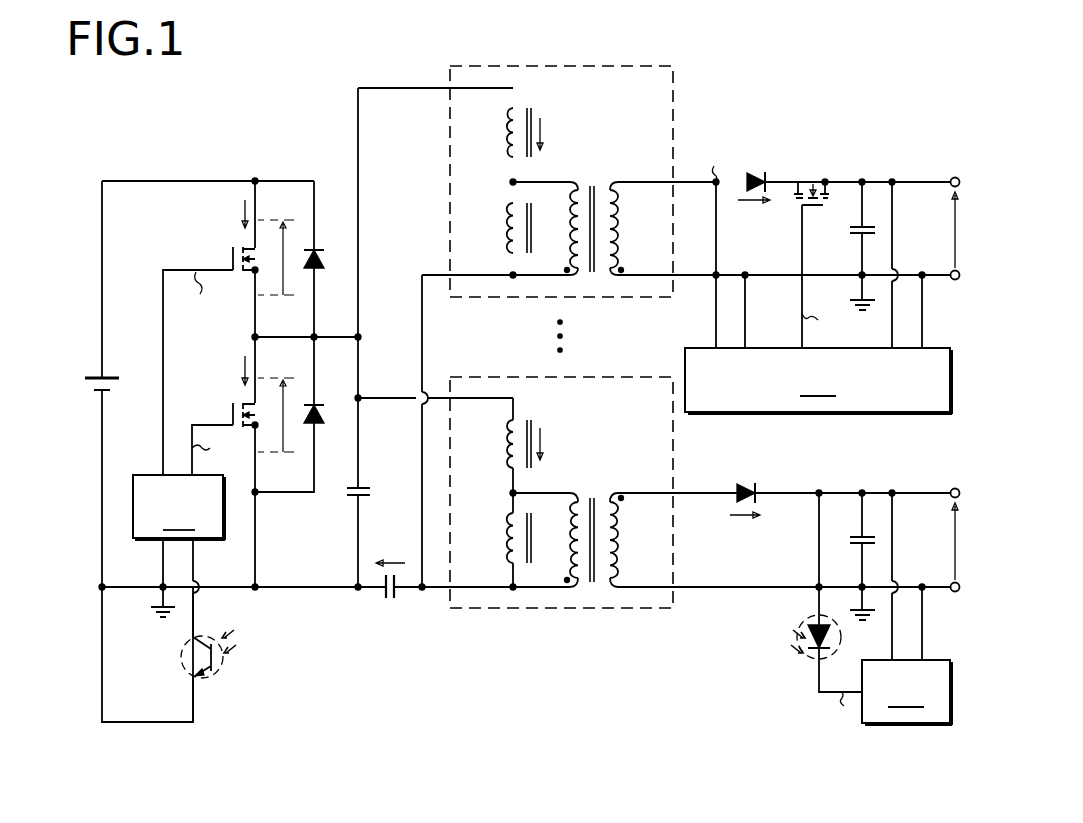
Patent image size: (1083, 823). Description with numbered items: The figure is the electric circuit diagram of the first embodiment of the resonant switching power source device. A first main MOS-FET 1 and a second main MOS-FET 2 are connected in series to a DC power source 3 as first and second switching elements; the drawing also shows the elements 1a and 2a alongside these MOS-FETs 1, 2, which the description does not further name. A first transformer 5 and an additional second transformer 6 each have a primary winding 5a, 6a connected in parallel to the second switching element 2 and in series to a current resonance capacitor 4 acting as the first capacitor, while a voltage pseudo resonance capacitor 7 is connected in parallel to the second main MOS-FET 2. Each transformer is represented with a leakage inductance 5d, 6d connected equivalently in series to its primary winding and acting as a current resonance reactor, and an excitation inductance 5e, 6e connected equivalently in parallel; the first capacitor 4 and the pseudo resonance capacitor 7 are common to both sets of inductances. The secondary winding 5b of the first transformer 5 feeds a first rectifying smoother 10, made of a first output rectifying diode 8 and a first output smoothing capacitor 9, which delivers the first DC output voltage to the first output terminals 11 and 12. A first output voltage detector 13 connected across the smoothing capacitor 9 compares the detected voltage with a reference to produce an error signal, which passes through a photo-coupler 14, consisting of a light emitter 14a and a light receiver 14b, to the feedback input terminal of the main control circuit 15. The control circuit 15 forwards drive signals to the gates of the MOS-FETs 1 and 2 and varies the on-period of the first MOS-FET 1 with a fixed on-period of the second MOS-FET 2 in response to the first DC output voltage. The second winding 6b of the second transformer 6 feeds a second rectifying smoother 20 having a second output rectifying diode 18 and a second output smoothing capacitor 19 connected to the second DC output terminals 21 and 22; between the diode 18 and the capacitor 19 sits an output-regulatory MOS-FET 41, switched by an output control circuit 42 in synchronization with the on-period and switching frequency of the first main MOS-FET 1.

The first main MOS-FET 1 is at (232, 257).
The body diode of first switching element 1a is at (322, 260).
The second main MOS-FET 2 is at (232, 413).
The body diode of second switching element 2a is at (322, 416).
The DC power source 3 is at (94, 376).
The current resonance capacitor 4 is at (390, 600).
The first transformer 5 is at (570, 611).
The first primary winding 5a is at (578, 495).
The secondary winding 5b is at (614, 544).
The first leakage inductance 5d is at (508, 446).
The first excitation inductance 5e is at (508, 540).
The second transformer 6 is at (445, 174).
The primary winding 6a is at (578, 184).
The second winding 6b is at (614, 234).
The second leakage inductance 6d is at (508, 136).
The second excitation inductance 6e is at (508, 230).
The voltage pseudo resonance capacitor 7 is at (369, 492).
The first output rectifying diode 8 is at (746, 486).
The first output smoothing capacitor 9 is at (852, 556).
The first rectifying smoother 10 is at (850, 474).
The first output terminal 11 is at (954, 487).
The first output terminal 12 is at (955, 593).
The first output voltage detector 13 is at (907, 692).
The photo-coupler 14 is at (764, 664).
The light emitter 14a is at (798, 622).
The light receiver 14b is at (190, 660).
The main control circuit 15 is at (179, 518).
The second output rectifying diode 18 is at (757, 172).
The second output smoothing capacitor 19 is at (850, 237).
The second rectifying smoother 20 is at (854, 162).
The second DC output terminal 21 is at (954, 175).
The second DC output terminal 22 is at (955, 281).
The output-regulatory MOS-FET 41 is at (813, 172).
The output control circuit 42 is at (818, 381).